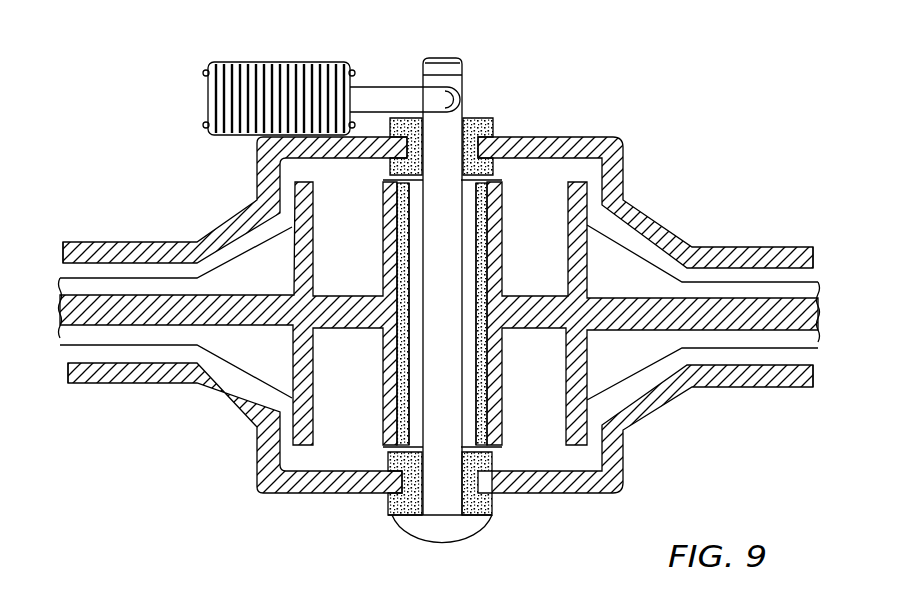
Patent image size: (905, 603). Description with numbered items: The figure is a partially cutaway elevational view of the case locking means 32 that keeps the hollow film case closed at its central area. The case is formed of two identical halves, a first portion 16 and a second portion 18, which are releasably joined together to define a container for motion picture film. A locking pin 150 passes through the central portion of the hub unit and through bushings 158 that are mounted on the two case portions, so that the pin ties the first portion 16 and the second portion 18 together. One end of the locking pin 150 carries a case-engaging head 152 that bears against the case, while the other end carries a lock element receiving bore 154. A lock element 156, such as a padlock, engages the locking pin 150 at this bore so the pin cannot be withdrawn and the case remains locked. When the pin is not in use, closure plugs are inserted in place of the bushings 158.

The case locking means 32 is at (580, 78).
The first portion 16 is at (815, 373).
The second portion 18 is at (815, 251).
The locking pin 150 is at (463, 100).
The case-engaging head 152 is at (469, 537).
The lock element receiving bore 154 is at (462, 90).
The lock element 156 is at (383, 87).
The bushings 158 is at (494, 120).